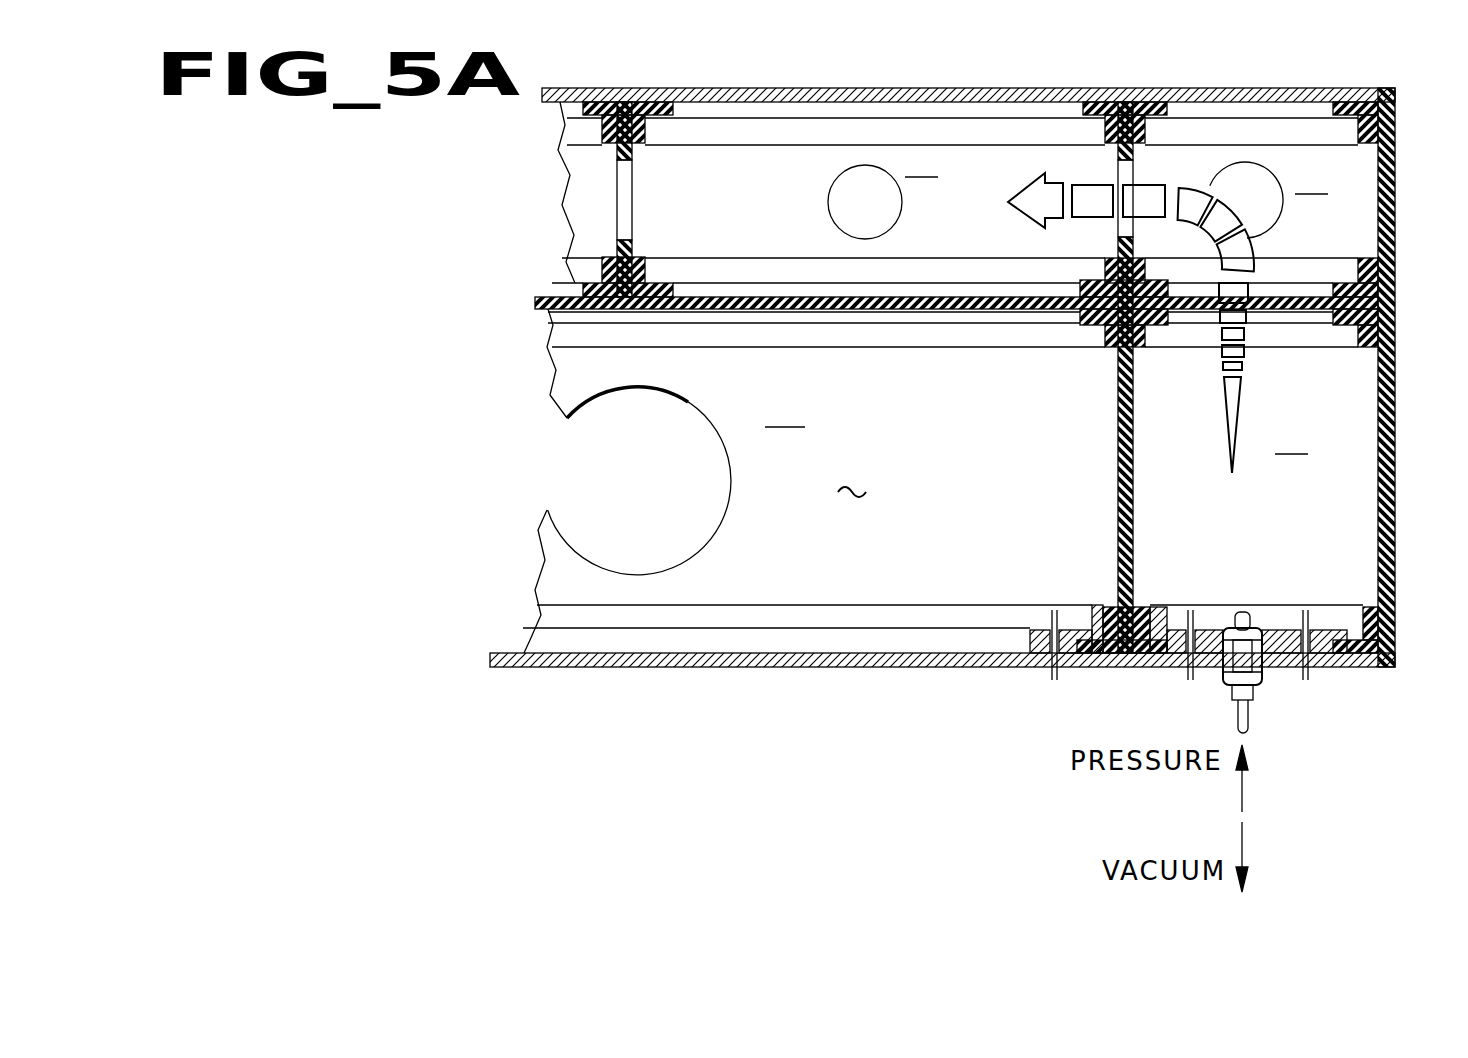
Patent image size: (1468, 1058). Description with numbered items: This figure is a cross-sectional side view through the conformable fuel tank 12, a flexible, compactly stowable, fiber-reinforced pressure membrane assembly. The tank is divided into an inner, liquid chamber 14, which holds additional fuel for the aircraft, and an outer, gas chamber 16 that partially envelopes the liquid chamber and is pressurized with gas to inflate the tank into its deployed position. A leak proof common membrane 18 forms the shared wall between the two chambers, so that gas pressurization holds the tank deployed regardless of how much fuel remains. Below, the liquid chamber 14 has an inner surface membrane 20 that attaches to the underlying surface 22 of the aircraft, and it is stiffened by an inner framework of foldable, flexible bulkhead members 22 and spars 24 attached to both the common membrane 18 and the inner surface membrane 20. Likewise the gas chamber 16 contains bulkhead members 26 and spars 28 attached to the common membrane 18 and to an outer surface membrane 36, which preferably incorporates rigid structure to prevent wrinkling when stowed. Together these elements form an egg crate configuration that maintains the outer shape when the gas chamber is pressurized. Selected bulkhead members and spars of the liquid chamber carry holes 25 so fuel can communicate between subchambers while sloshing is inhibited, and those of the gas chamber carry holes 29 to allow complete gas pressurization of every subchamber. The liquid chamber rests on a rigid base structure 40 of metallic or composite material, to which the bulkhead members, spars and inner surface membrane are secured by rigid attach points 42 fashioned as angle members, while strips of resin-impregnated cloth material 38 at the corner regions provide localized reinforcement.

The conformable fuel tank 12 is at (1421, 190).
The inner liquid chamber 14 is at (790, 578).
The outer gas chamber 16 is at (971, 152).
The common membrane 18 is at (1016, 312).
The inner surface membrane 20 is at (882, 648).
The bulkhead members 22 is at (955, 348).
The spars 24 is at (1115, 438).
The holes 25 is at (640, 572).
The bulkhead members 26 is at (1119, 321).
The spars 28 is at (683, 112).
The holes 29 is at (625, 192).
The outer surface membrane 36 is at (908, 88).
The strips of resin-impregnated cloth material 38 is at (578, 98).
The rigid base structure 40 is at (948, 645).
The rigid attach points 42 is at (1072, 628).